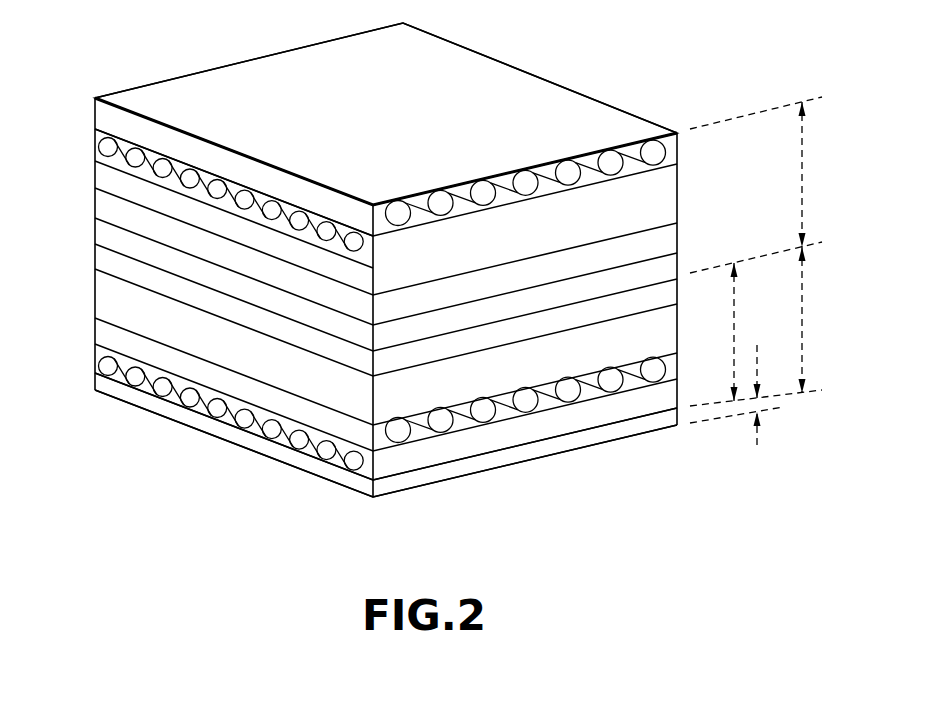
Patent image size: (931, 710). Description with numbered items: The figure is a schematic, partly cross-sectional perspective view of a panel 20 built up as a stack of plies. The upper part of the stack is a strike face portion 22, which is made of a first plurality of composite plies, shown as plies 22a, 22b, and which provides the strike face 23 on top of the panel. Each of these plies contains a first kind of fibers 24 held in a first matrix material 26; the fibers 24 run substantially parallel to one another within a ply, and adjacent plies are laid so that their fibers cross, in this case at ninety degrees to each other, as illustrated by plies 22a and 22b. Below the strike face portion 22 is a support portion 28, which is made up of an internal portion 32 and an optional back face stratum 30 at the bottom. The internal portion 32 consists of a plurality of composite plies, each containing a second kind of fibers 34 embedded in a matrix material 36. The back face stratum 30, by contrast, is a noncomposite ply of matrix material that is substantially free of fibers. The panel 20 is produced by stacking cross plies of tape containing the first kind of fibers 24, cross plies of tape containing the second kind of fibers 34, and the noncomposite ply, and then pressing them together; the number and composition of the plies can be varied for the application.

The panel 20 is at (643, 40).
The strike face portion 22 is at (801, 180).
The first ply 22a is at (102, 112).
The second ply 22b is at (106, 140).
The strike face 23 is at (203, 117).
The first kind of fibers 24 is at (136, 158).
The first matrix material 26 is at (672, 143).
The support portion 28 is at (801, 314).
The back face stratum 30 is at (758, 397).
The internal portion 32 is at (733, 326).
The second kind of fibers 34 is at (524, 403).
The matrix material 36 is at (672, 378).